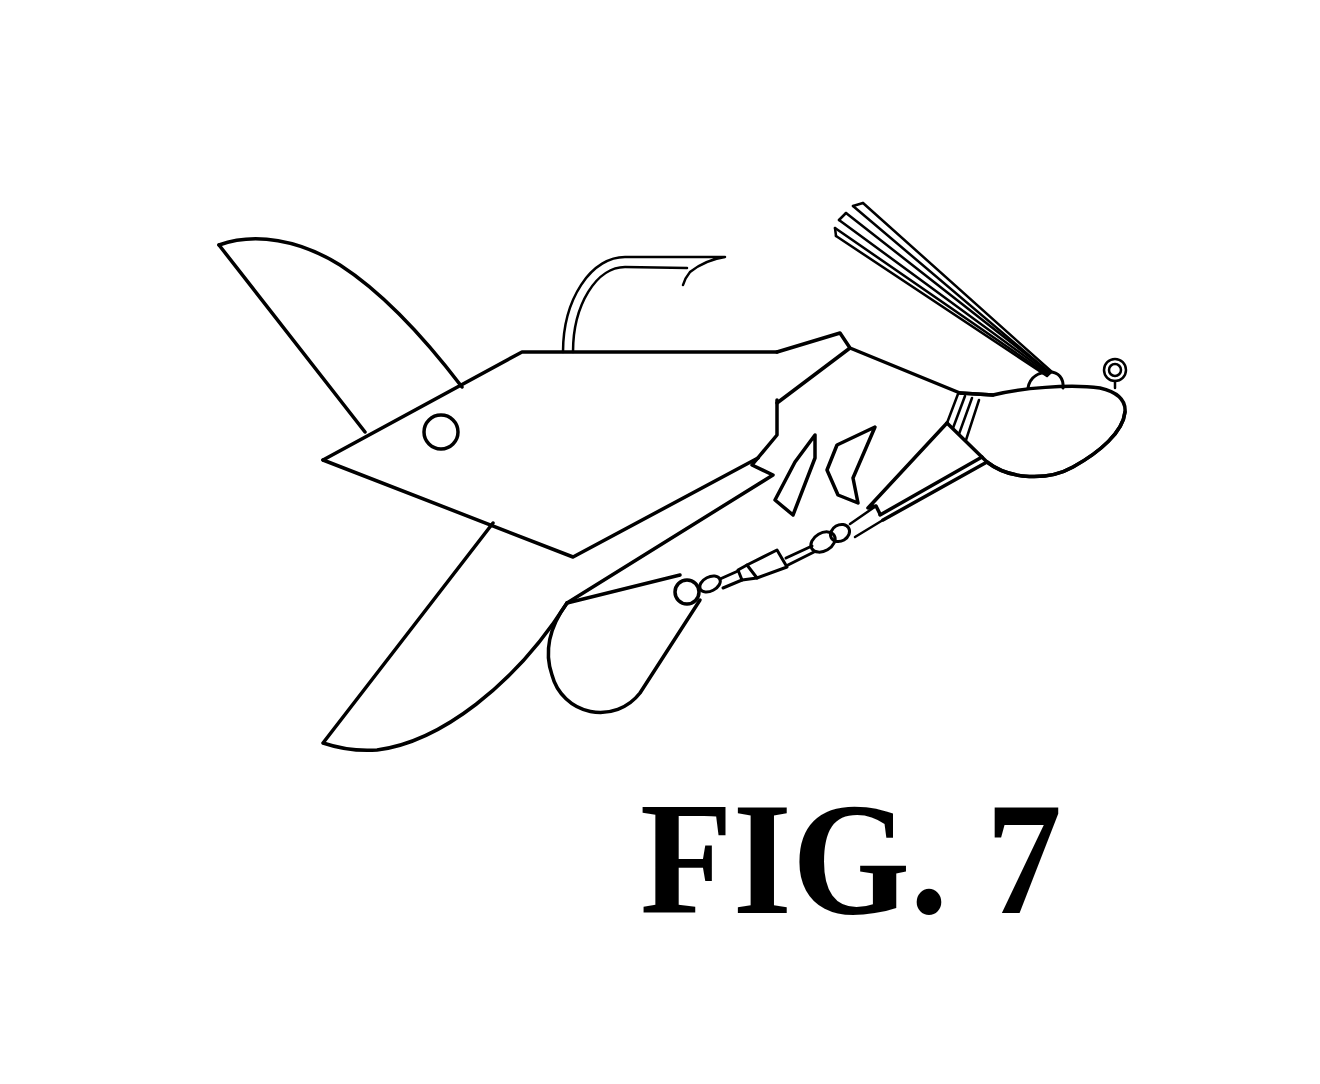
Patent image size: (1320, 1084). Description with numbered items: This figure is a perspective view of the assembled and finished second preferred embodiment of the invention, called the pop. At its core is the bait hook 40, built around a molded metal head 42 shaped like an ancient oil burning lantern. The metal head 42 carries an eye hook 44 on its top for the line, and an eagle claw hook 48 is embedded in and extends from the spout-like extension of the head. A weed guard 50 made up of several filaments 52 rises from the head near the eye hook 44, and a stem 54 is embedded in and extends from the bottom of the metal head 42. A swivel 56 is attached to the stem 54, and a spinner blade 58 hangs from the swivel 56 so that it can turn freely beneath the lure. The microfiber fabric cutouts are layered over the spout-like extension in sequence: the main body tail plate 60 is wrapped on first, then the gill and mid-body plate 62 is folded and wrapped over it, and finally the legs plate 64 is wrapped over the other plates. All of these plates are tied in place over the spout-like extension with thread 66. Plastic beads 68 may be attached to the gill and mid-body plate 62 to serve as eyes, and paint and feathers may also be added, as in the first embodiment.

The bait hook 40 is at (1123, 423).
The molded metal head 42 is at (1087, 460).
The eye hook 44 is at (1125, 362).
The eagle claw hook 48 is at (622, 257).
The weed guard 50 is at (1037, 355).
The filaments 52 is at (852, 204).
The stem 54 is at (933, 493).
The swivel 56 is at (775, 578).
The spinner blade 58 is at (660, 670).
The main body tail plate 60 is at (253, 300).
The gill and mid-body plate 62 is at (357, 477).
The legs plate 64 is at (884, 400).
The thread 66 is at (953, 383).
The plastic beads 68 is at (460, 430).